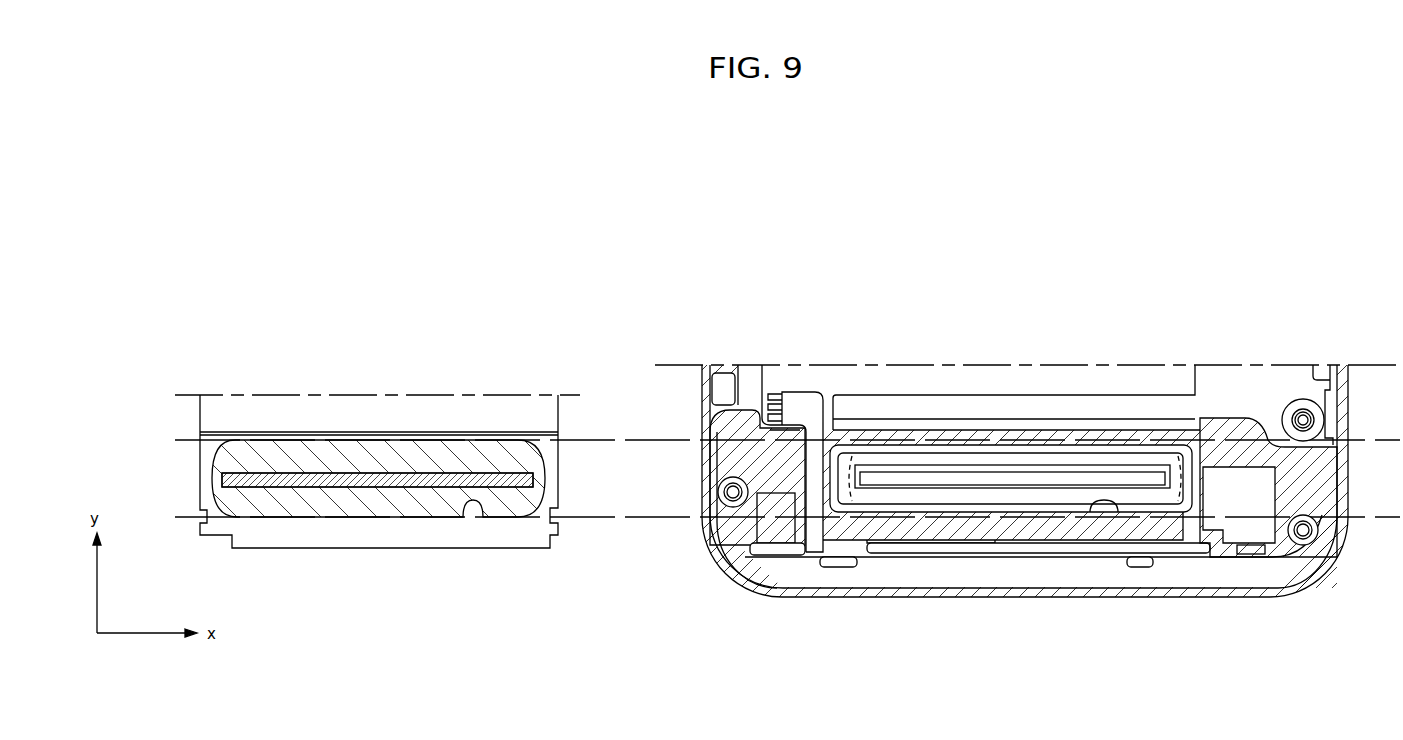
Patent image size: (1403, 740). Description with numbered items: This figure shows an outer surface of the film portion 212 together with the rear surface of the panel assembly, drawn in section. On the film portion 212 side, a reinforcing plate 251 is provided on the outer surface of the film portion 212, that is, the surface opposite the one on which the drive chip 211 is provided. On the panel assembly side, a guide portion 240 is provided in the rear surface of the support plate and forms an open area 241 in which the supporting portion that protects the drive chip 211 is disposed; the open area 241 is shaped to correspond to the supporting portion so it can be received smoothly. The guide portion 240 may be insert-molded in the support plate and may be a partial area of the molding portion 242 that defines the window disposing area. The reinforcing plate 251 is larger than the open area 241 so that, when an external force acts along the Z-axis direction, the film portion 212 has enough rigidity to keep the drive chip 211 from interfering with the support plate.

The drive chip 211 is at (388, 480).
The film portion 212 is at (440, 418).
The reinforcing plate 251 is at (330, 455).
The guide portion 240 is at (1142, 442).
The open area 241 is at (948, 478).
The molding portion 242 is at (772, 465).